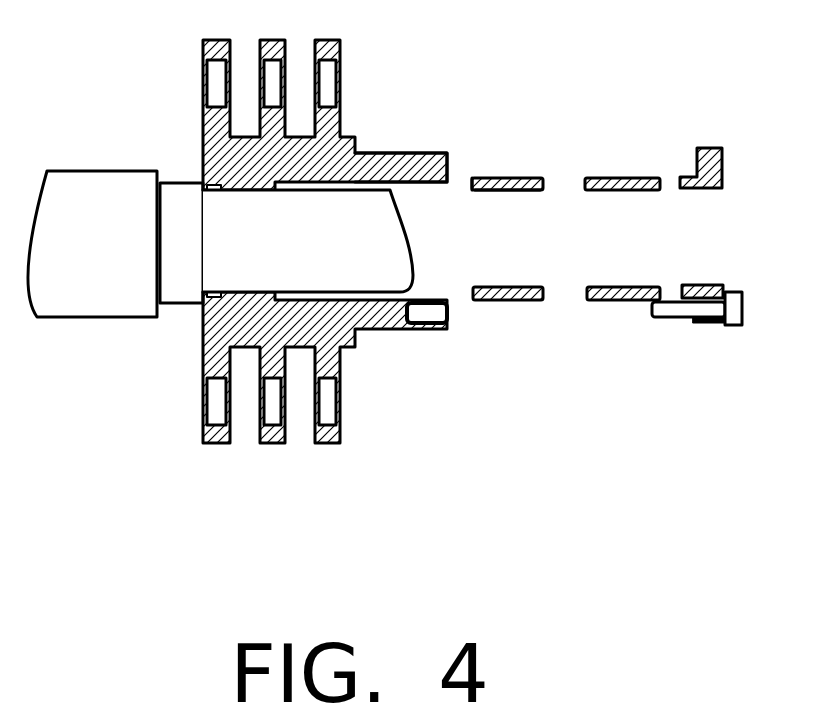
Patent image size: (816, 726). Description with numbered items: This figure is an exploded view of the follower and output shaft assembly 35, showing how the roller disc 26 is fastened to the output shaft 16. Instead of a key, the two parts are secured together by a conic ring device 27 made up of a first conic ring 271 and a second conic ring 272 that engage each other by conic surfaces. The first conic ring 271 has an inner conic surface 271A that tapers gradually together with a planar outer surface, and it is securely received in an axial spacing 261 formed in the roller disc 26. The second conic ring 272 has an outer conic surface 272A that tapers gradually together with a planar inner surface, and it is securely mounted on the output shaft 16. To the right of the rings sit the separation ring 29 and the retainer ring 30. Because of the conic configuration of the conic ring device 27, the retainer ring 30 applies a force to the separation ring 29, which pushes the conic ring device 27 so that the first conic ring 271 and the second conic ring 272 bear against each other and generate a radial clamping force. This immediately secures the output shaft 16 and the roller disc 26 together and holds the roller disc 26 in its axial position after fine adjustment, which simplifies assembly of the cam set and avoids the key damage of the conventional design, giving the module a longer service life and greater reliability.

The output shaft 16 is at (160, 286).
The roller disc 26 is at (343, 313).
The axial spacing 261 is at (372, 172).
The conic ring device 27 is at (503, 312).
The first conic ring 271 is at (482, 179).
The inner conic surface 271A is at (478, 189).
The second conic ring 272 is at (512, 195).
The outer conic surface 272A is at (532, 178).
The separation ring 29 is at (627, 300).
The retainer ring 30 is at (722, 158).
The follower and output shaft assembly 35 is at (757, 458).